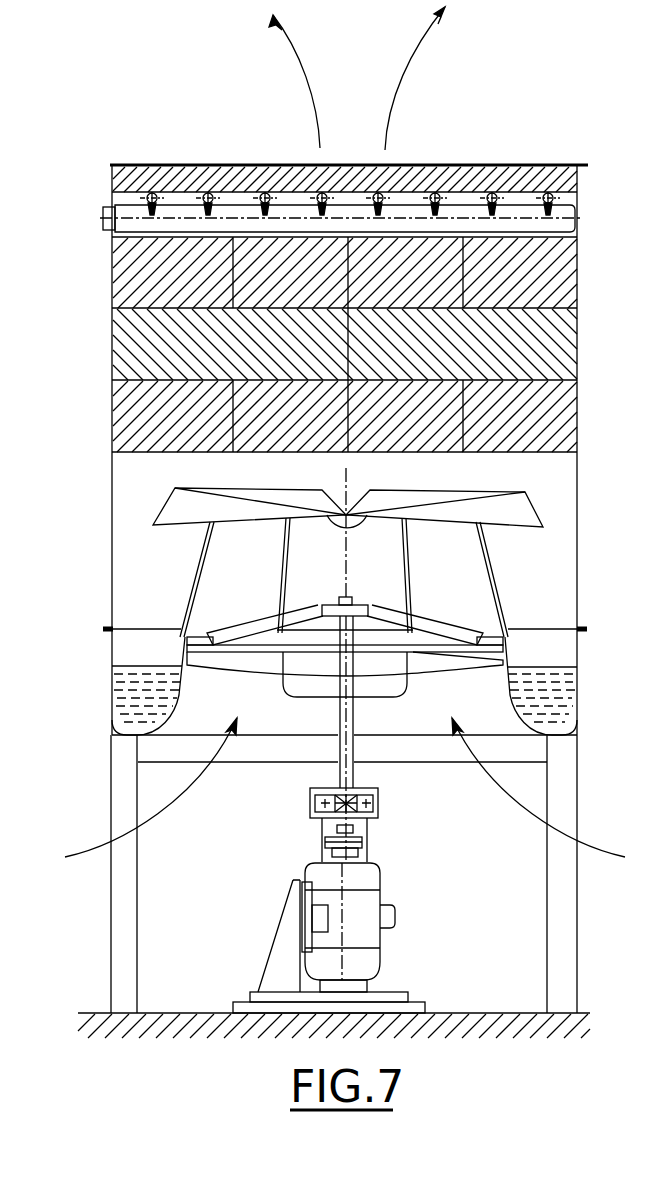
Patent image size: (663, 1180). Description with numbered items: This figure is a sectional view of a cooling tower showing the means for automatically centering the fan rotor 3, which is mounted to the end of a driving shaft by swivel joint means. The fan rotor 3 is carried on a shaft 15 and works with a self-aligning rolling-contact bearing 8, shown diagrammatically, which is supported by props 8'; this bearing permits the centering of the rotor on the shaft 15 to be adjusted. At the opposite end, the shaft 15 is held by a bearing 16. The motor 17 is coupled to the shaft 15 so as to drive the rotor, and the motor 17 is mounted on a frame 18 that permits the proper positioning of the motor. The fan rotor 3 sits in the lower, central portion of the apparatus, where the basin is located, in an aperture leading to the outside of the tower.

The fan rotor 3 is at (462, 667).
The self-aligning rolling-contact bearing 8 is at (195, 621).
The props 8' is at (454, 610).
The shaft 15 is at (348, 747).
The bearing 16 is at (378, 808).
The motor 17 is at (365, 938).
The frame 18 is at (285, 971).